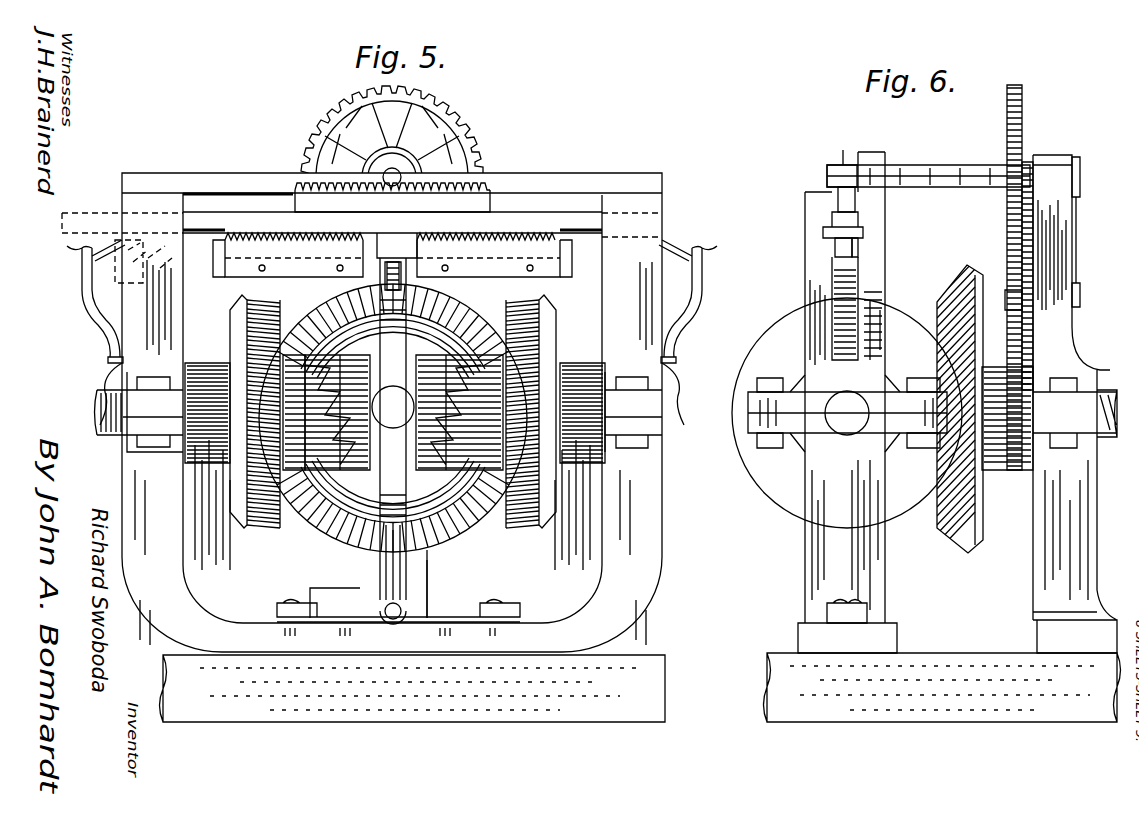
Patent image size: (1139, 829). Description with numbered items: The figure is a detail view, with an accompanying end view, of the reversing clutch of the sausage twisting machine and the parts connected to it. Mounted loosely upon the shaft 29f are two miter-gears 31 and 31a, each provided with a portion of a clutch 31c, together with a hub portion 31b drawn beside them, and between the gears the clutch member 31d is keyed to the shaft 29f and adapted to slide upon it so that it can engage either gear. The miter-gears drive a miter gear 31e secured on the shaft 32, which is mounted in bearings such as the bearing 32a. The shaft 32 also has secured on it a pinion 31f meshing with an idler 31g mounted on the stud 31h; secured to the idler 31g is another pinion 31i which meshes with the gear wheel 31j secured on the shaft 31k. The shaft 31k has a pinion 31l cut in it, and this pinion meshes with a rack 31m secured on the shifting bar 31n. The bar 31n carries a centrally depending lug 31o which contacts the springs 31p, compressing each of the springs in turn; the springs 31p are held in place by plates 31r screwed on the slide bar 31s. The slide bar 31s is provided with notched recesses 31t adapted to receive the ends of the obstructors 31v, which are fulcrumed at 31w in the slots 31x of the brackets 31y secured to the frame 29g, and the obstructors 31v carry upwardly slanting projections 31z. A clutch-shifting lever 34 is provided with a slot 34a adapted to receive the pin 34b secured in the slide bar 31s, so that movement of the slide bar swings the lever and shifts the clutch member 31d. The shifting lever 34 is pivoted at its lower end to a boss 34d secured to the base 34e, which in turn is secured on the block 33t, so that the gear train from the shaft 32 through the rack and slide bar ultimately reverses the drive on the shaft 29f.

In FIG. 5, the shaft 29f is at (98, 388).
In FIG. 6, the shaft 29f is at (852, 427).
In FIG. 5, the frame 29g is at (150, 482).
In FIG. 6, the frame 29g is at (806, 470).
In FIG. 5, the miter-gear 31 is at (562, 512).
In FIG. 6, the miter-gear 31 is at (783, 492).
In FIG. 5, the miter-gear 31a is at (240, 505).
In FIG. 5, the left hub collar 31b is at (298, 472).
In FIG. 5, the clutch portion 31c is at (455, 505).
In FIG. 5, the clutch member 31d is at (345, 482).
In FIG. 6, the miter gear 31e is at (960, 424).
In FIG. 6, the pinion 31f is at (1078, 330).
In FIG. 6, the idler 31g is at (1033, 250).
In FIG. 6, the stud 31h is at (1082, 295).
In FIG. 6, the pinion 31i is at (1008, 290).
In FIG. 5, the gear wheel 31j is at (440, 138).
In FIG. 6, the gear wheel 31j is at (1022, 118).
In FIG. 6, the shaft 31k is at (920, 168).
In FIG. 5, the pinion 31l is at (398, 176).
In FIG. 6, the pinion 31l is at (845, 162).
In FIG. 5, the rack 31m is at (469, 204).
In FIG. 6, the rack 31m is at (856, 200).
In FIG. 5, the shifting bar 31n is at (270, 212).
In FIG. 6, the shifting bar 31n is at (858, 220).
In FIG. 5, the depending lug 31o is at (400, 235).
In FIG. 5, the springs 31p is at (305, 237).
In FIG. 5, the plates 31r is at (392, 258).
In FIG. 5, the slide bar 31s is at (522, 295).
In FIG. 5, the notched recesses 31t is at (100, 285).
In FIG. 5, the obstructors 31v is at (90, 252).
In FIG. 6, the obstructors 31v is at (840, 250).
In FIG. 5, the fulcrum 31w is at (190, 228).
In FIG. 6, the slots 31x is at (853, 248).
In FIG. 5, the brackets 31y is at (88, 265).
In FIG. 6, the brackets 31y is at (845, 268).
In FIG. 5, the upwardly slanting projections 31z is at (62, 222).
In FIG. 6, the shaft 32 is at (1075, 404).
In FIG. 5, the bearing 32a is at (430, 587).
In FIG. 6, the bearing 32a is at (1040, 378).
In FIG. 5, the block 33t is at (413, 688).
In FIG. 6, the block 33t is at (942, 687).
In FIG. 5, the clutch-shifting lever 34 is at (393, 441).
In FIG. 5, the slot 34a is at (393, 418).
In FIG. 5, the pin 34b is at (385, 275).
In FIG. 5, the boss 34d is at (412, 615).
In FIG. 5, the base 34e is at (380, 640).